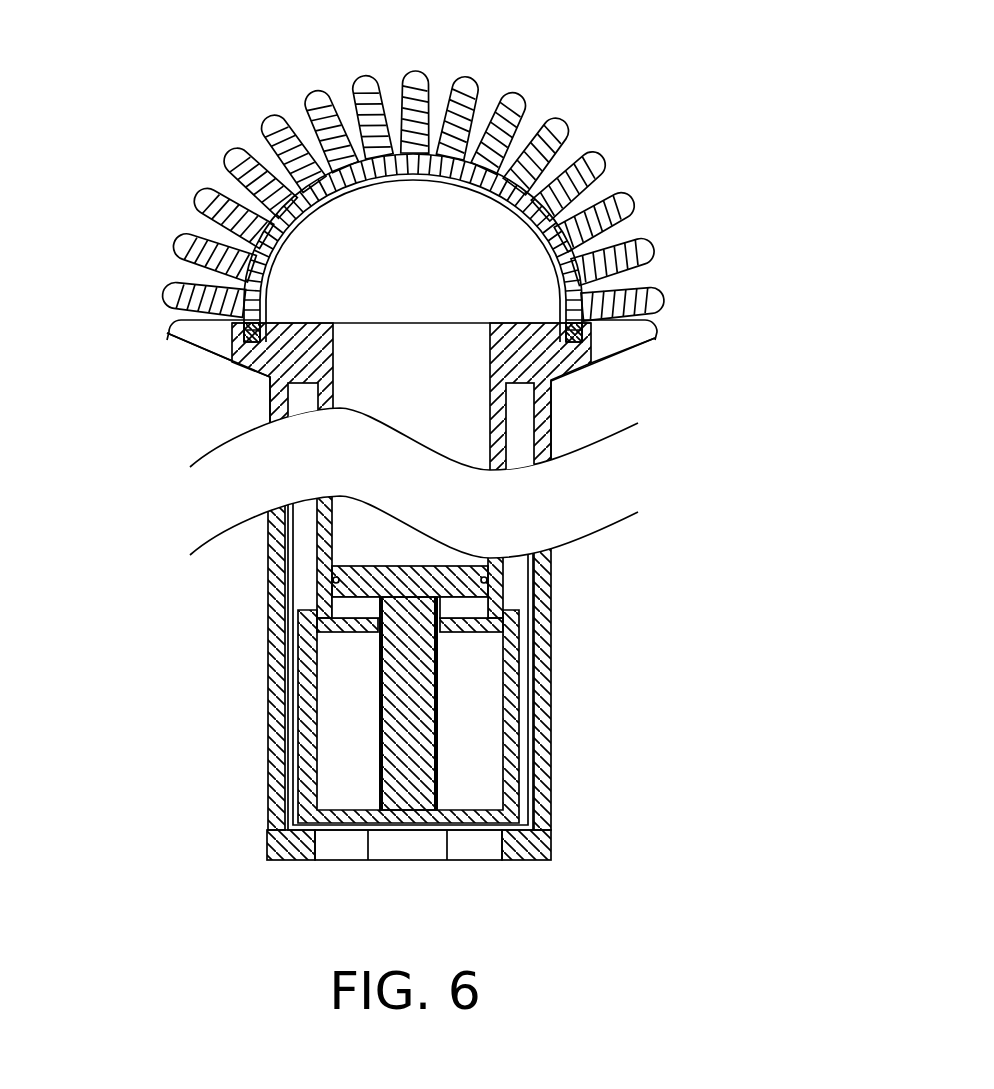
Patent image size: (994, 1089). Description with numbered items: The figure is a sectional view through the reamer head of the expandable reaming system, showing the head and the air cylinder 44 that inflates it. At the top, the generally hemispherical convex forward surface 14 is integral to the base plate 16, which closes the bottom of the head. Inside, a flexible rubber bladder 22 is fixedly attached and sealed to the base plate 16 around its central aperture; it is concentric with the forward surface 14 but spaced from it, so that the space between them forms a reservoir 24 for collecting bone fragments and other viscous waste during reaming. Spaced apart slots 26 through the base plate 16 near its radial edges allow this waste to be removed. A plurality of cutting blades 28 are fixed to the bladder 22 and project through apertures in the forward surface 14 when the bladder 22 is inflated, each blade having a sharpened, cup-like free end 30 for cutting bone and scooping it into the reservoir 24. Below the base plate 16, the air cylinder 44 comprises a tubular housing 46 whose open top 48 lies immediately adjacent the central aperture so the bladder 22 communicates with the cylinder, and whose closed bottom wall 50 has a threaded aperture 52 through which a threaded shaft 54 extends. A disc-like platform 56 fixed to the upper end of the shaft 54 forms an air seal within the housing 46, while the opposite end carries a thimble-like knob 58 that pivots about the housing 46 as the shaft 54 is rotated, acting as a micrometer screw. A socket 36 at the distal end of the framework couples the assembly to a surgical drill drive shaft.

The forward surface 14 is at (490, 92).
The base plate 16 is at (270, 378).
The bladder 22 is at (548, 263).
The reservoir 24 is at (588, 198).
The slots 26 is at (222, 350).
The cutting blades 28 is at (528, 113).
The free end 30 is at (652, 250).
The socket 36 is at (340, 862).
The air cylinder 44 is at (312, 573).
The tubular housing 46 is at (503, 579).
The open top 48 is at (367, 321).
The bottom wall 50 is at (485, 637).
The threaded aperture 52 is at (442, 637).
The threaded shaft 54 is at (442, 728).
The platform 56 is at (411, 403).
The knob 58 is at (296, 718).